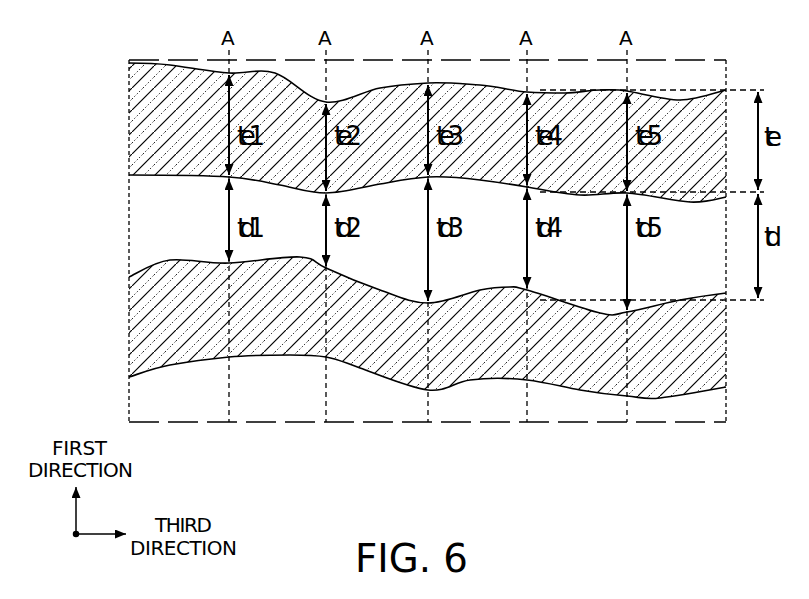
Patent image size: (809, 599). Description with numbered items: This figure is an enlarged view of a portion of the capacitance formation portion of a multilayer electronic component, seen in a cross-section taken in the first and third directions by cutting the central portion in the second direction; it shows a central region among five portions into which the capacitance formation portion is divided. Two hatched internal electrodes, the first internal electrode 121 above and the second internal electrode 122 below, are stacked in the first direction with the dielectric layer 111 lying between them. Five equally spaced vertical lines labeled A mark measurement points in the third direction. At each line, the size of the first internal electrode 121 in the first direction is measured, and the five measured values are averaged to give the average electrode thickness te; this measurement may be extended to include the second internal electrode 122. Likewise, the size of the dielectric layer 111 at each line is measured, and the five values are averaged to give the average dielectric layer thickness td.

The dielectric layer 111 is at (135, 228).
The first internal electrode 121 is at (137, 119).
The second internal electrode 122 is at (137, 325).